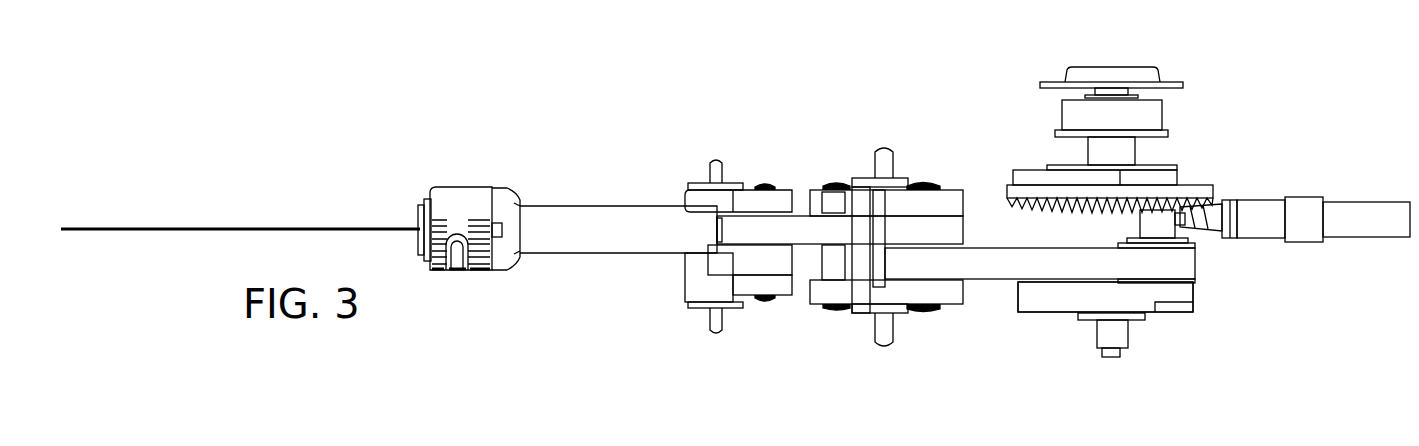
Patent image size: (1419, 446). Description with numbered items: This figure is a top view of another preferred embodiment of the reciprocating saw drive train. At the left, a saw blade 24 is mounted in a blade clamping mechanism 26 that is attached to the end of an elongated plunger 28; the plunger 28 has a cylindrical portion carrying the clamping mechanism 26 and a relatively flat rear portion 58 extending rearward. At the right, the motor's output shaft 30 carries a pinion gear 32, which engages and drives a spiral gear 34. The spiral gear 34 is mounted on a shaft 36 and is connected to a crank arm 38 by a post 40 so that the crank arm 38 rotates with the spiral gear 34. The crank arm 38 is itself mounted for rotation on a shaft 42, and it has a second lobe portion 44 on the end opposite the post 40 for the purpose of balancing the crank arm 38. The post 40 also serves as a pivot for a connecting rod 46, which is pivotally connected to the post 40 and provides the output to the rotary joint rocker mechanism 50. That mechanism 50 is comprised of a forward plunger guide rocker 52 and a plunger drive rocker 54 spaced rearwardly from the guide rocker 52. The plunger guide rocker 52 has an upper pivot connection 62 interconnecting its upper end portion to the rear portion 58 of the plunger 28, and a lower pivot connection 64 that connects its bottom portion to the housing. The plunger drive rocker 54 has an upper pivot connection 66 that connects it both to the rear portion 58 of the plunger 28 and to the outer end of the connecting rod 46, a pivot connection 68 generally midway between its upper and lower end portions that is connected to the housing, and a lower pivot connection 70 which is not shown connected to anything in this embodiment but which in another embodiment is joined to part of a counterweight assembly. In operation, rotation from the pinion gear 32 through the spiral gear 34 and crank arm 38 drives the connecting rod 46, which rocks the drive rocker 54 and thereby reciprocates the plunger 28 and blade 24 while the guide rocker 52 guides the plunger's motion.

The saw blade 24 is at (210, 228).
The blade clamping mechanism 26 is at (450, 186).
The plunger 28 is at (586, 260).
The output shaft 30 is at (1260, 218).
The pinion gear 32 is at (1212, 218).
The spiral gear 34 is at (1200, 185).
The shaft 36 is at (1088, 150).
The crank arm 38 is at (1177, 293).
The post 40 is at (1185, 232).
The shaft 42 is at (1112, 360).
The second lobe portion 44 is at (1050, 297).
The connecting rod 46 is at (985, 265).
The rotary joint rocker mechanism 50 is at (852, 98).
The plunger guide rocker 52 is at (750, 200).
The plunger drive rocker 54 is at (953, 198).
The rear portion 58 is at (805, 214).
The upper pivot connection 62 is at (765, 185).
The lower pivot connection 64 is at (715, 160).
The upper pivot connection 66 is at (935, 181).
The pivot connection 68 is at (887, 145).
The lower pivot connection 70 is at (836, 182).